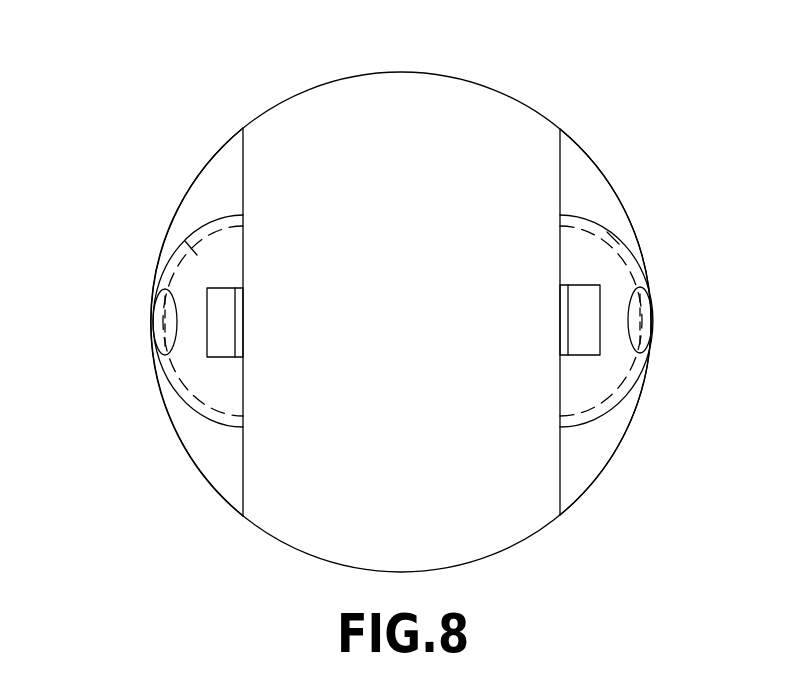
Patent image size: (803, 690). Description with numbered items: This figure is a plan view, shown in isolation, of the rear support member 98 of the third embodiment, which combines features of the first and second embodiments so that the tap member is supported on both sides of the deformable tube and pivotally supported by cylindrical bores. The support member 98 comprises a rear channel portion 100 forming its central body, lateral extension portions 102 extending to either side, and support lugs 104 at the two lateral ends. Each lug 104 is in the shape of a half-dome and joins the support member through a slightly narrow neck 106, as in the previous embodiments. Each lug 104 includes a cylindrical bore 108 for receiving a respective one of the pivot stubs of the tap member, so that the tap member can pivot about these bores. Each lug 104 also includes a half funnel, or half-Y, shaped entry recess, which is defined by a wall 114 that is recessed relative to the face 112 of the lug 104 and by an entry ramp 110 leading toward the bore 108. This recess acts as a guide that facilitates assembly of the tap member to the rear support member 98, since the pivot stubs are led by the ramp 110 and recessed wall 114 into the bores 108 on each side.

The support member 98 is at (575, 62).
The rear channel portion 100 is at (390, 118).
The lateral extension portions 102 is at (208, 165).
The support lugs 104 is at (183, 400).
The neck 106 is at (177, 235).
The cylindrical bore 108 is at (160, 327).
The entry ramp 110 is at (218, 315).
The face 112 is at (243, 382).
The wall 114 is at (237, 345).